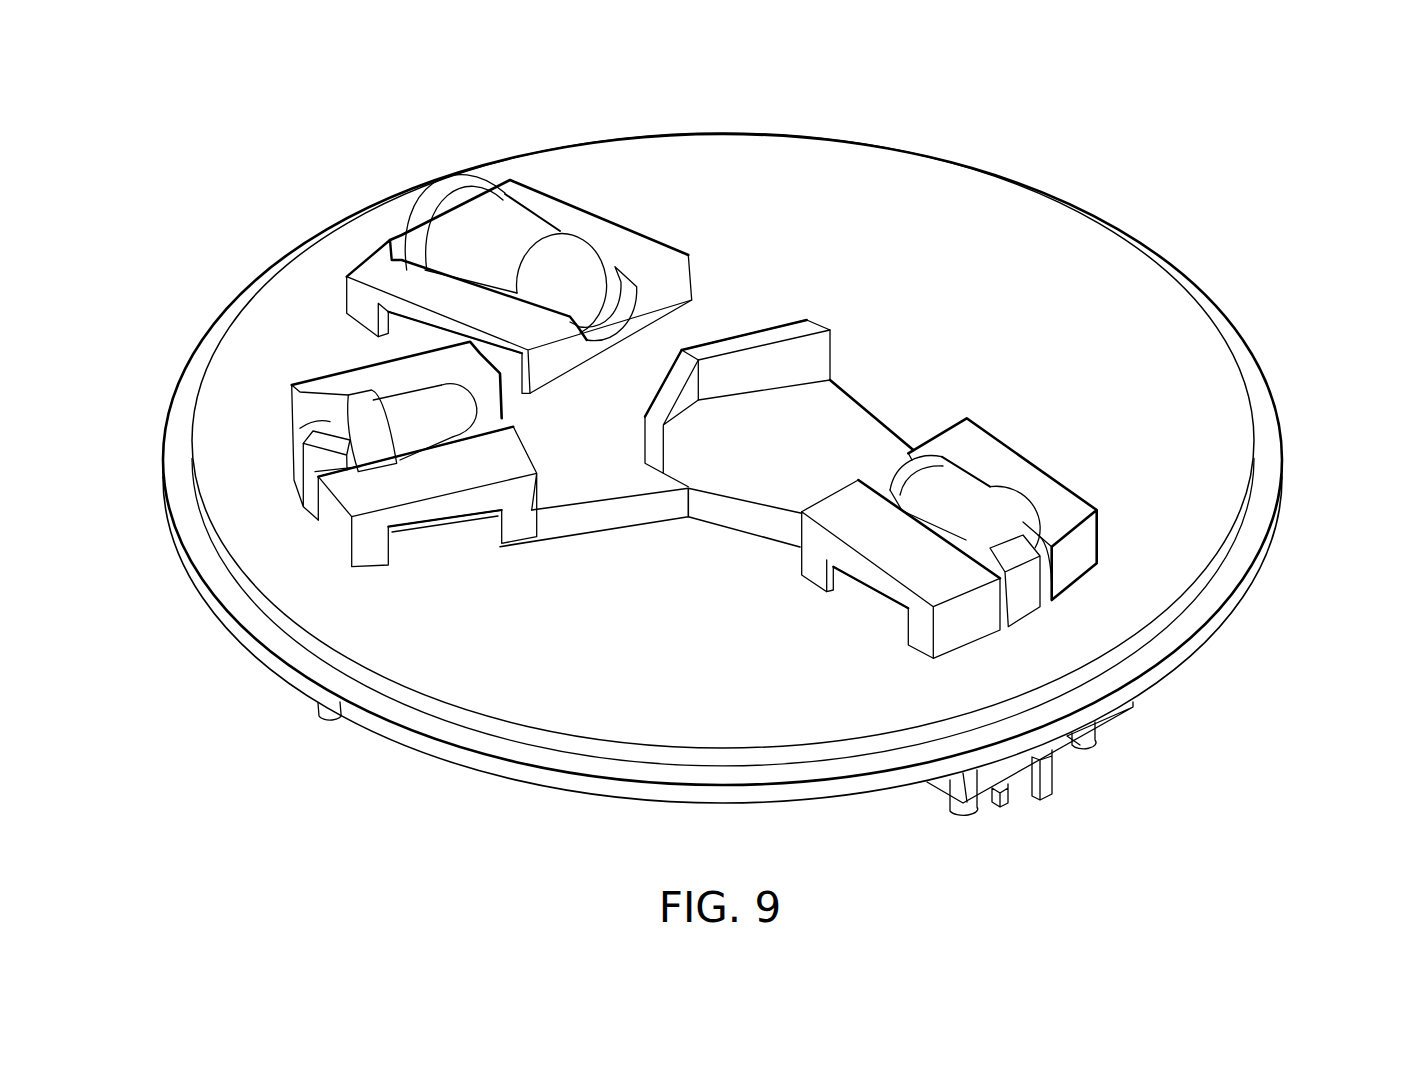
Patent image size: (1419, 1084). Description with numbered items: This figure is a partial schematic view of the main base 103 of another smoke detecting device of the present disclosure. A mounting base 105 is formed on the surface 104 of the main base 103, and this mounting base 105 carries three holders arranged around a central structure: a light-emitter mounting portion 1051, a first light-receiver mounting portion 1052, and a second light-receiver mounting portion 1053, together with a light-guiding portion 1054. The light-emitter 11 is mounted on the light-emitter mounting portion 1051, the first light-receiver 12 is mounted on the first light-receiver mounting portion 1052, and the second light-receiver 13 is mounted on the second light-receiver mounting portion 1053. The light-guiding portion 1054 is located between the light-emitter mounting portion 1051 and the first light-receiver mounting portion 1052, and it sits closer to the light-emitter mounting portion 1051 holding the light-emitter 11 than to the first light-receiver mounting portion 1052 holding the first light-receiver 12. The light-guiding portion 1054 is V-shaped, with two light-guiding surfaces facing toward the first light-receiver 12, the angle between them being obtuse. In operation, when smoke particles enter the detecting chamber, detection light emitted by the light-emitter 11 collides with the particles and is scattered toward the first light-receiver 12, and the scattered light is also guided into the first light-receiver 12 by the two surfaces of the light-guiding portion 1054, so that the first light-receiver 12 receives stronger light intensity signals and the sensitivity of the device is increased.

The light-emitter 11 is at (470, 215).
The first light-receiver 12 is at (947, 488).
The second light-receiver 13 is at (410, 413).
The main base 103 is at (1202, 409).
The surface 104 is at (965, 208).
The mounting base 105 is at (751, 471).
The light-emitter mounting portion 1051 is at (519, 234).
The first light-receiver mounting portion 1052 is at (1086, 468).
The second light-receiver mounting portion 1053 is at (334, 510).
The light-guiding portion 1054 is at (787, 330).